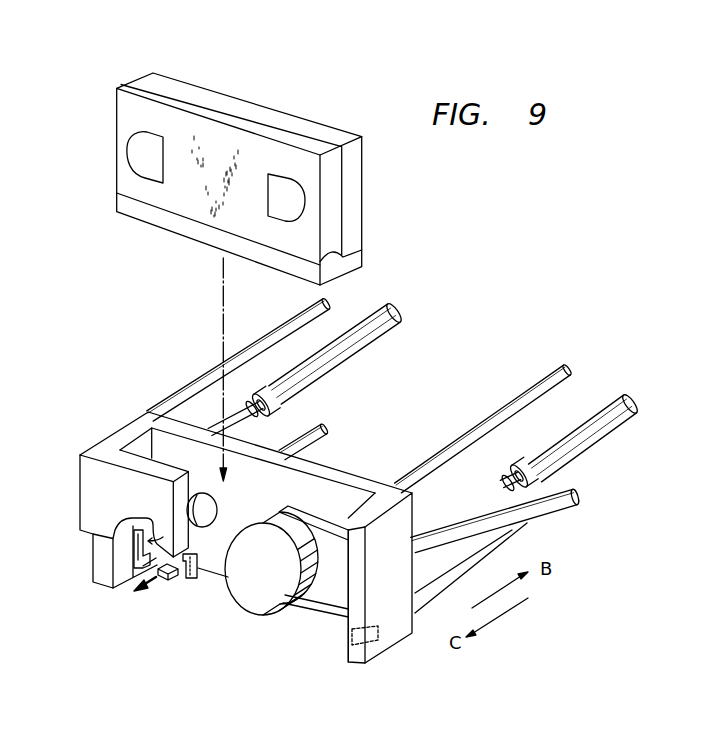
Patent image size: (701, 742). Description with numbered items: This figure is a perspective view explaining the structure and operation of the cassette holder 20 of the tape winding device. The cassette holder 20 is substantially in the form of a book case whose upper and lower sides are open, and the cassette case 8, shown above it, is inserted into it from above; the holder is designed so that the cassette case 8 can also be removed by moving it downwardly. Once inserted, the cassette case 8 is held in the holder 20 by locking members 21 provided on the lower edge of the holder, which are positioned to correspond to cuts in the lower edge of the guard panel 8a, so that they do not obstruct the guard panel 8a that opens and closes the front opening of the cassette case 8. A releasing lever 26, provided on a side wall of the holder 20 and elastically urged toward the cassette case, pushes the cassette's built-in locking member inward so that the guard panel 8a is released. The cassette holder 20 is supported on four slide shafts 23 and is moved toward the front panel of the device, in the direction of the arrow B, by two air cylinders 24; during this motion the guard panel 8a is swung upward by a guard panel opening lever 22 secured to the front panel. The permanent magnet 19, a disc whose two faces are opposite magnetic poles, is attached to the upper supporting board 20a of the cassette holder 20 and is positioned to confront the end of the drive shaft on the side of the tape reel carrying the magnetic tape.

The cassette case 8 is at (198, 82).
The guard panel 8a is at (337, 272).
The permanent magnet 19 is at (262, 600).
The cassette holder 20 is at (301, 616).
The upper supporting board 20a is at (93, 522).
The locking member 21 is at (173, 580).
The guard panel opening lever 22 is at (195, 580).
The slide shaft 23 is at (193, 382).
The air cylinder 24 is at (392, 323).
The releasing lever 26 is at (142, 571).